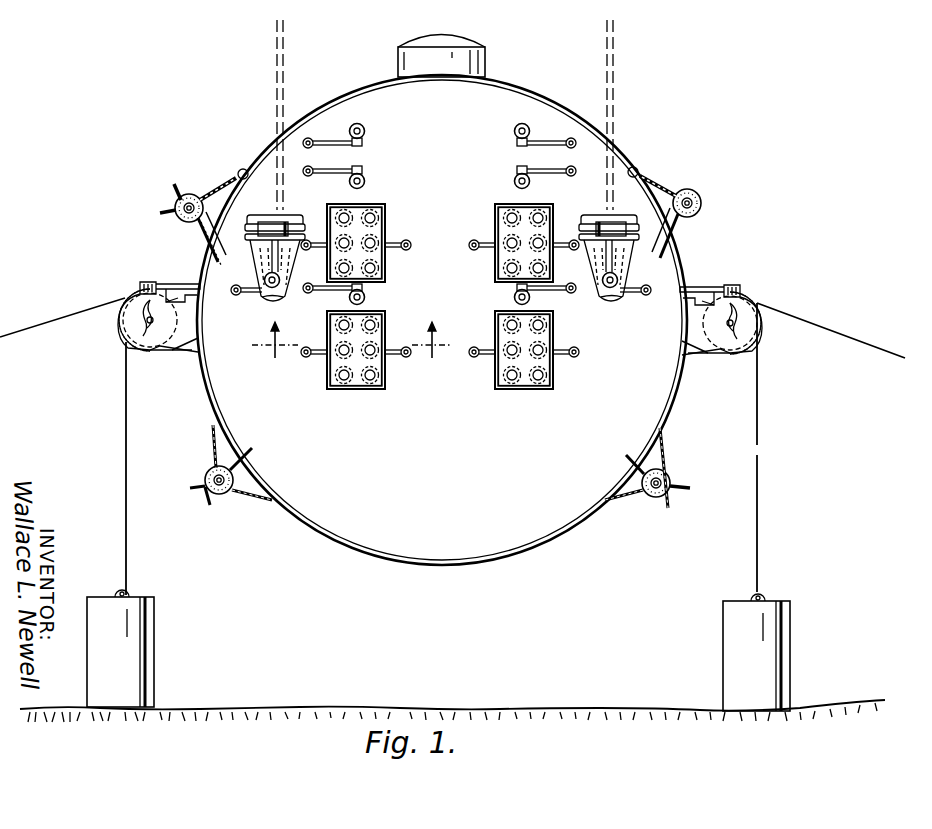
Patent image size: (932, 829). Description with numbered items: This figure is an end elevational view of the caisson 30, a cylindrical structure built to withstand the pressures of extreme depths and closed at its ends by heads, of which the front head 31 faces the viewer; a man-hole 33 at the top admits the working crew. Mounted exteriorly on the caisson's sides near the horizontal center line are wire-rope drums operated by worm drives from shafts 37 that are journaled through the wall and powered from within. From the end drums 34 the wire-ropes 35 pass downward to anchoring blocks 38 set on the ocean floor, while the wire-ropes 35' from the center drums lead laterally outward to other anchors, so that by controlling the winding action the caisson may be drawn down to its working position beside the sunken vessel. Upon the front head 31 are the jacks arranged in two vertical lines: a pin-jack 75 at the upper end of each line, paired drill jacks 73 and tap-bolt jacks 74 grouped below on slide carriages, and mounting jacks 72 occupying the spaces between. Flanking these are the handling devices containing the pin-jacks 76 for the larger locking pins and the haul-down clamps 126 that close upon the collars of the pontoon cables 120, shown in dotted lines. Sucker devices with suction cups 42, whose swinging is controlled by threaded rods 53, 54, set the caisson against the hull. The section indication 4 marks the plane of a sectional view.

The caisson 30 is at (572, 537).
The front head 31 is at (380, 532).
The man-hole 33 is at (467, 44).
The pontoon cable 120 is at (285, 48).
The drill jack 73 is at (374, 219).
The tap-bolt jack 74 is at (344, 219).
The pin-jack 75 is at (366, 132).
The mounting jack 72 is at (366, 183).
The haul-down clamp 126 is at (283, 215).
The pin-jack 76 is at (280, 296).
The suction cup 42 is at (178, 212).
The threaded rod 53 is at (212, 192).
The threaded rod 54 is at (177, 199).
The shaft 37 is at (182, 290).
The wire-rope drum 34 is at (162, 347).
The wire-rope 35 is at (394, 446).
The wire-rope 35' is at (832, 330).
The anchoring block 38 is at (140, 655).
The section line 4- 4 is at (352, 347).